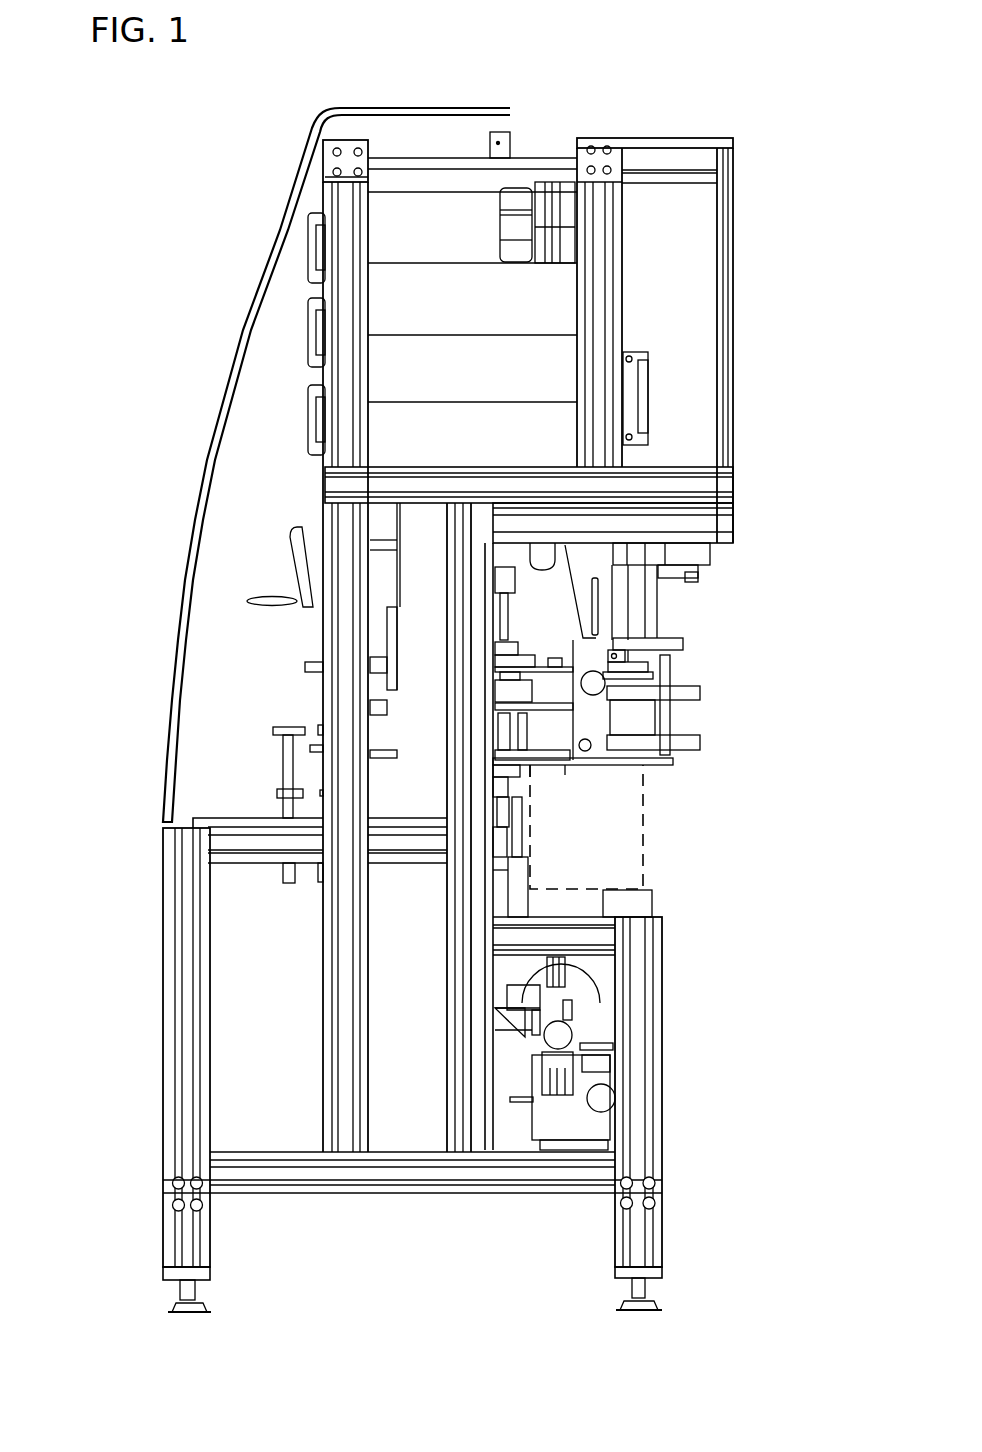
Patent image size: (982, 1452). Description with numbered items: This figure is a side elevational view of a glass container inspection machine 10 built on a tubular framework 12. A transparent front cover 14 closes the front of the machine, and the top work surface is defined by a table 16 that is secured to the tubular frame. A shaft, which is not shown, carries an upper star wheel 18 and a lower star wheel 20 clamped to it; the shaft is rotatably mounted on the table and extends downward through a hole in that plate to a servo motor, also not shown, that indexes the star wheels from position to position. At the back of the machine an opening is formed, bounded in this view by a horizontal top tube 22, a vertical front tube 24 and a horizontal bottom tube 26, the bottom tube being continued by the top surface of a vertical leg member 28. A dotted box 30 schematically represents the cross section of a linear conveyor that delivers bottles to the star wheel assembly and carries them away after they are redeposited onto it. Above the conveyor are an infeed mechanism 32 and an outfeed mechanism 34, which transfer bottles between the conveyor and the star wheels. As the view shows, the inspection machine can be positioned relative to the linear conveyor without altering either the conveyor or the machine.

The glass container inspection machine 10 is at (137, 783).
The tubular framework 12 is at (188, 1018).
The transparent front cover 14 is at (197, 503).
The table 16 is at (235, 818).
The upper star wheel 18 is at (528, 655).
The lower star wheel 20 is at (583, 837).
The horizontal top tube 22 is at (717, 524).
The vertical front tube 24 is at (472, 950).
The horizontal bottom tube 26 is at (573, 935).
The vertical leg member 28 is at (637, 985).
The dotted box 30 is at (620, 817).
The infeed mechanism 32 is at (603, 592).
The outfeed mechanism 34 is at (709, 690).